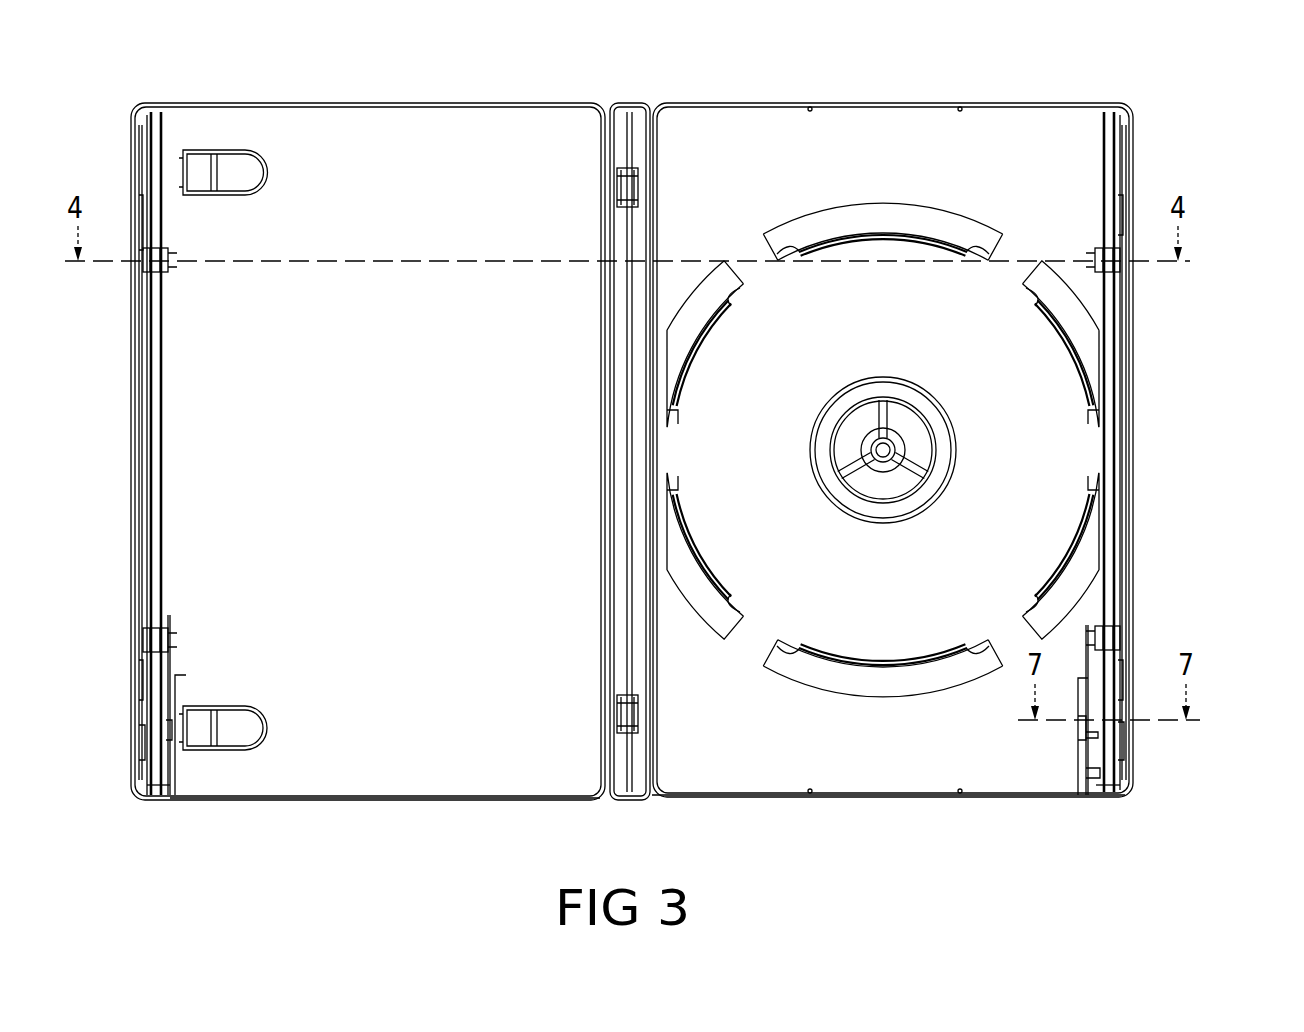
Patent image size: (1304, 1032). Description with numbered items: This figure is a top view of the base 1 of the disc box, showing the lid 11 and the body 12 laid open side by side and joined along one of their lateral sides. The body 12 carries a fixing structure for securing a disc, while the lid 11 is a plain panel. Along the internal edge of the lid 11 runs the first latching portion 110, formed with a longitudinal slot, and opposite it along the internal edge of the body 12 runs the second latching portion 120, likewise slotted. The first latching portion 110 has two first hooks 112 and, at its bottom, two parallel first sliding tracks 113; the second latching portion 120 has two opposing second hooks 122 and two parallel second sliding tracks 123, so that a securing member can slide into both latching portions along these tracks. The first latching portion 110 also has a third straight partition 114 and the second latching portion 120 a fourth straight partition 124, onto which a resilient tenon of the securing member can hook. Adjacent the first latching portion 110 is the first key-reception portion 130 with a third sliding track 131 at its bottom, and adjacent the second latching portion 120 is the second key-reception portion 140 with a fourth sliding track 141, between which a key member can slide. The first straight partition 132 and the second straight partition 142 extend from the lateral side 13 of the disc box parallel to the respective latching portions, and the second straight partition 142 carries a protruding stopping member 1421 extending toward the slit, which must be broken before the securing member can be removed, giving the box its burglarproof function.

The base 1 is at (630, 102).
The lid 11 is at (390, 148).
The body 12 is at (868, 125).
The lateral side 13 is at (432, 800).
The first latching portion 110 is at (155, 800).
The first hooks 112 is at (145, 256).
The first sliding tracks 113 is at (150, 422).
The third straight partition 114 is at (138, 730).
The second latching portion 120 is at (1108, 797).
The second hooks 122 is at (1118, 266).
The second sliding tracks 123 is at (1118, 450).
The fourth straight partition 124 is at (1122, 728).
The first key-reception portion 130 is at (168, 800).
The third sliding track 131 is at (166, 748).
The first straight partition 132 is at (176, 758).
The second key-reception portion 140 is at (1090, 795).
The fourth sliding track 141 is at (1096, 770).
The second straight partition 142 is at (1082, 752).
The stopping member 1421 is at (1094, 731).